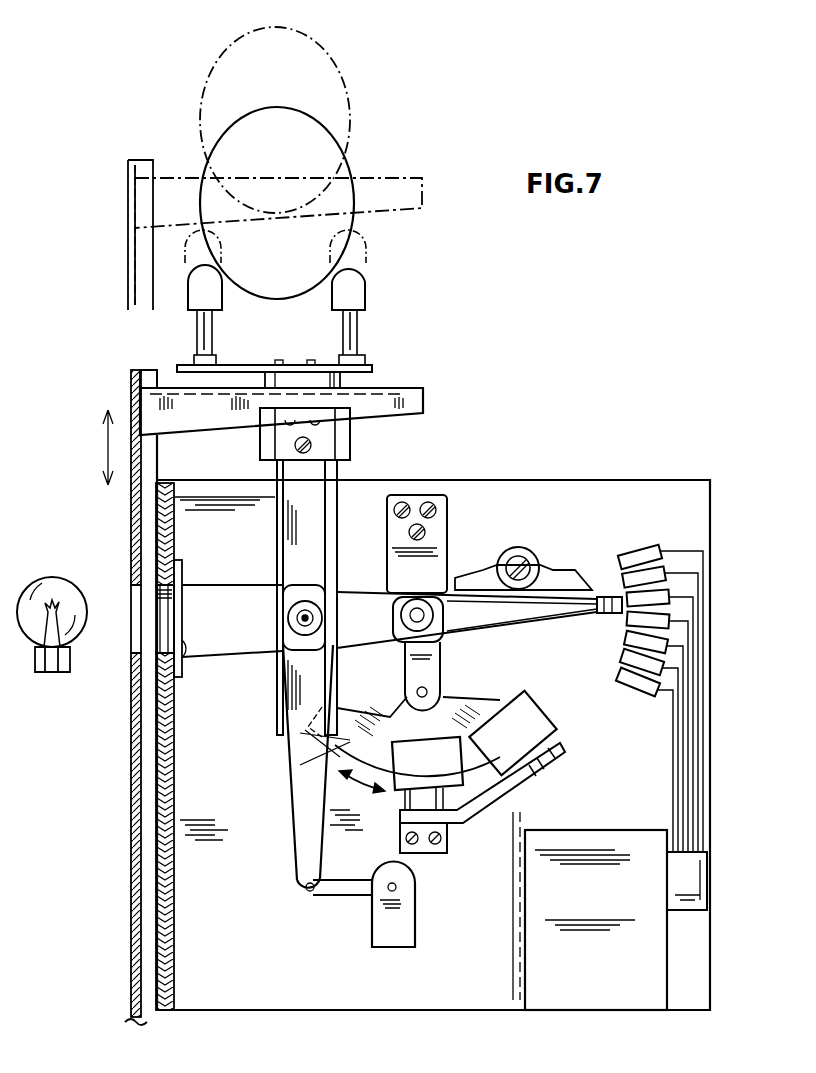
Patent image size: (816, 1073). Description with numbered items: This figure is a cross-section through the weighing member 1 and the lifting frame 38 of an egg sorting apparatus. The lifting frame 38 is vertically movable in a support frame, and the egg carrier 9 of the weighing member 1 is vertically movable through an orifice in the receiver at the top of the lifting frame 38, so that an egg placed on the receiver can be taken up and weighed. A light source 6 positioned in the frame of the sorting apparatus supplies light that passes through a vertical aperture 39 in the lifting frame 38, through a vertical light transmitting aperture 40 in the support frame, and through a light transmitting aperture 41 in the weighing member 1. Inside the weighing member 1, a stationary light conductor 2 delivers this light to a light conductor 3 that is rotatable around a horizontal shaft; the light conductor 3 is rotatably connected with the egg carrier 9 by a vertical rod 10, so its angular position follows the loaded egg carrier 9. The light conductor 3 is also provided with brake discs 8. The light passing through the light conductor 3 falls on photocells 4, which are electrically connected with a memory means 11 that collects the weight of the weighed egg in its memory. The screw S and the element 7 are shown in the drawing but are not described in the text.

The weighing member 1 is at (636, 474).
The stationary light conductor 2 is at (213, 600).
The light conductor 3 is at (545, 603).
The photocells 4 is at (647, 572).
The light source 6 is at (67, 596).
The contact blocks 7 is at (498, 740).
The brake discs 8 is at (300, 758).
The egg carrier 9 is at (350, 285).
The vertical rod 10 is at (305, 537).
The memory means 11 is at (597, 942).
The lifting frame 38 is at (392, 176).
The vertical aperture 39 is at (131, 636).
The vertical light transmitting aperture 40 is at (158, 640).
The light transmitting aperture 41 is at (186, 660).
The adjusting screw S is at (525, 560).